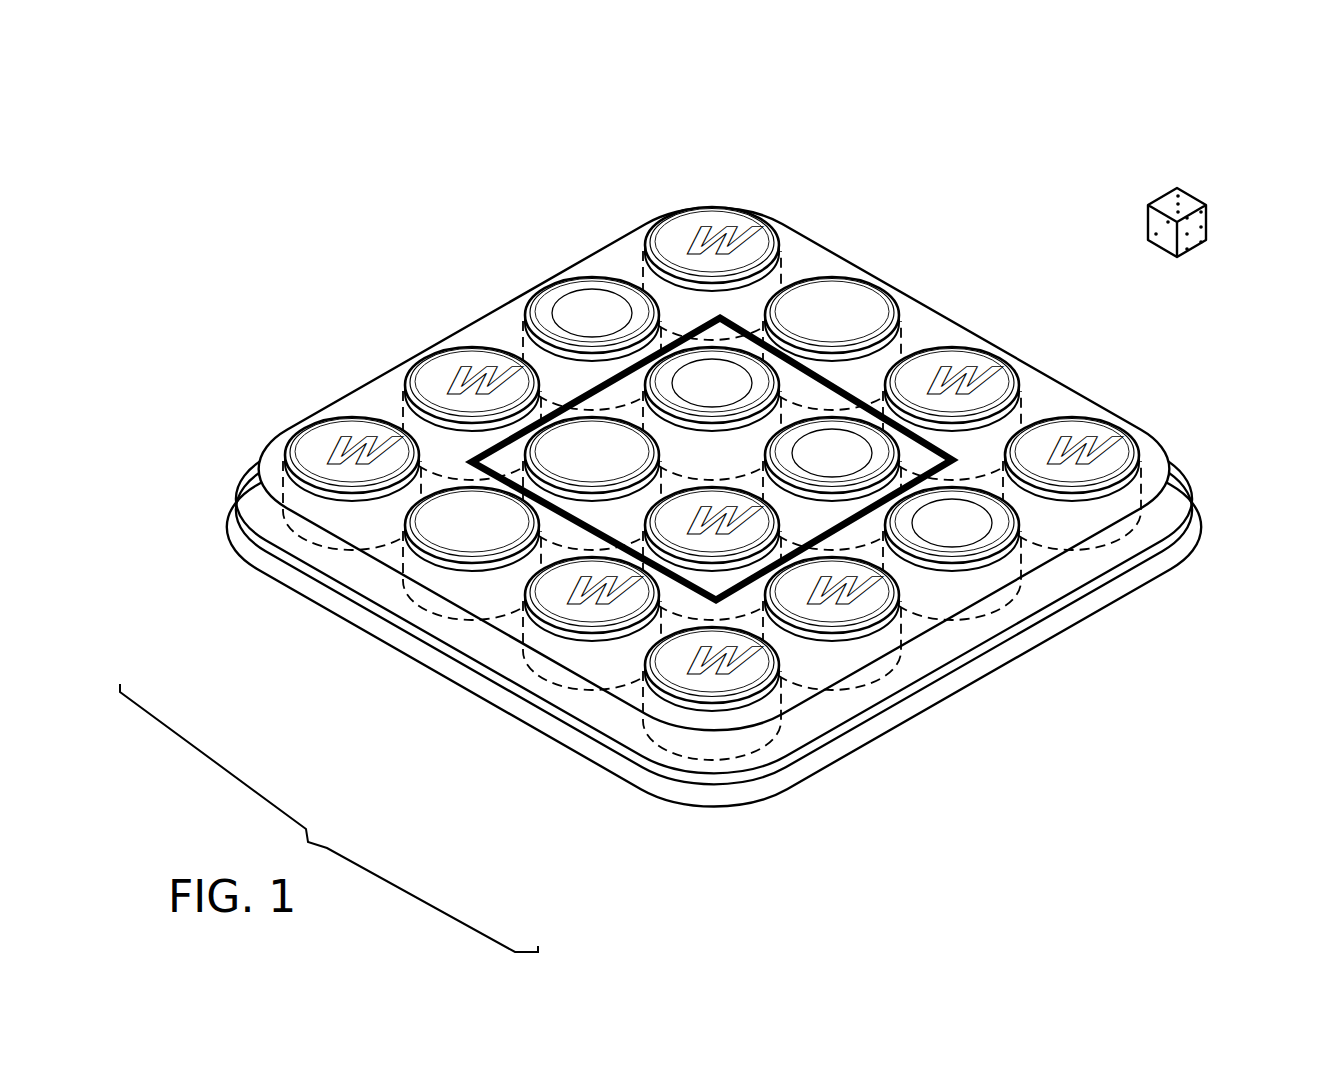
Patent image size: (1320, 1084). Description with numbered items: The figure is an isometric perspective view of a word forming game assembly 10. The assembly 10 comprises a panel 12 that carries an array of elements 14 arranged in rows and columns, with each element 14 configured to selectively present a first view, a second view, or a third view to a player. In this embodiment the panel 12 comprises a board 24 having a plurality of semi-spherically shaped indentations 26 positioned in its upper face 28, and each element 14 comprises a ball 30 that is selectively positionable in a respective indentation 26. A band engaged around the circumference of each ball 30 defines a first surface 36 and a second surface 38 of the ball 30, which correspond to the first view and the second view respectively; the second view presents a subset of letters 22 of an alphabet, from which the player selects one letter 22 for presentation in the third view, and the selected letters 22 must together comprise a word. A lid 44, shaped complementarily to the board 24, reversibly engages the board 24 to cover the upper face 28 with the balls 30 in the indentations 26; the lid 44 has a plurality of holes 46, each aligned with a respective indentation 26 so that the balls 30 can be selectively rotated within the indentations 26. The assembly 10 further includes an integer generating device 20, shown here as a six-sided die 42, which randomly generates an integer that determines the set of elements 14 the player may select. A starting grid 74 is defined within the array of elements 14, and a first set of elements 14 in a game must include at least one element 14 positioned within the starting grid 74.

The word forming game assembly 10 is at (1000, 148).
The panel 12 is at (725, 507).
The elements 14 is at (712, 481).
The integer generating device 20 is at (1216, 167).
The letters 22 is at (826, 292).
The board 24 is at (1118, 592).
The indentations 26 is at (966, 600).
The upper face 28 is at (1130, 541).
The ball 30 is at (662, 689).
The first surface 36 is at (754, 696).
The second surface 38 is at (532, 490).
The die 42 is at (1212, 207).
The lid 44 is at (1053, 388).
The holes 46 is at (1032, 418).
The starting grid 74 is at (735, 316).